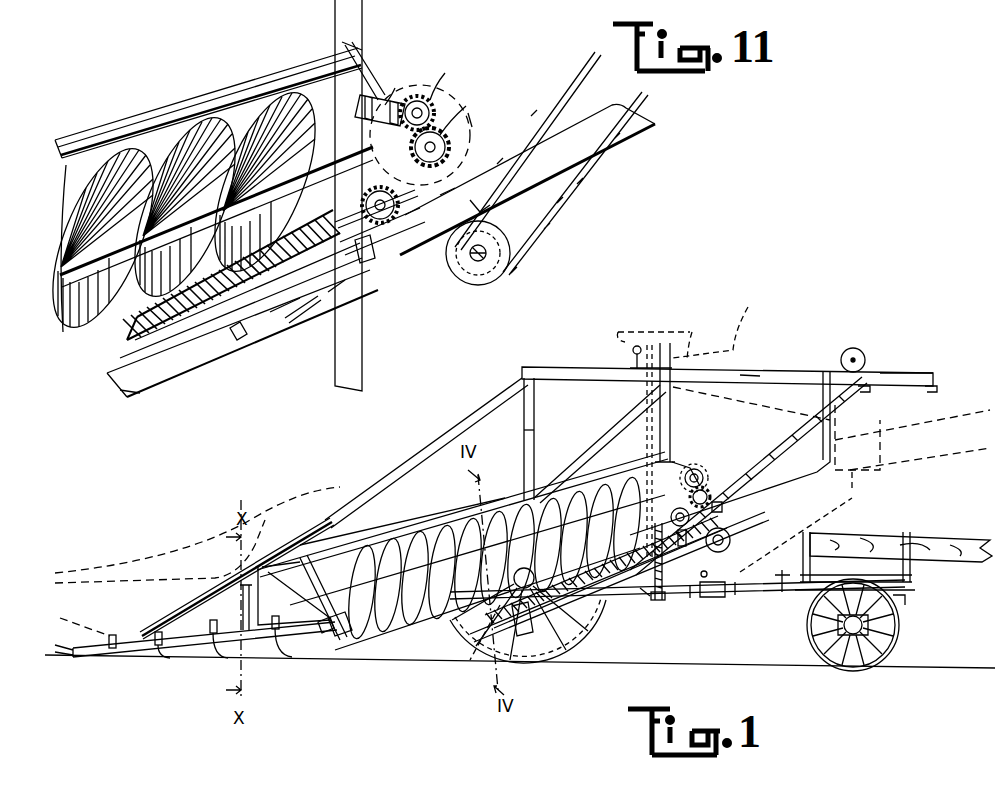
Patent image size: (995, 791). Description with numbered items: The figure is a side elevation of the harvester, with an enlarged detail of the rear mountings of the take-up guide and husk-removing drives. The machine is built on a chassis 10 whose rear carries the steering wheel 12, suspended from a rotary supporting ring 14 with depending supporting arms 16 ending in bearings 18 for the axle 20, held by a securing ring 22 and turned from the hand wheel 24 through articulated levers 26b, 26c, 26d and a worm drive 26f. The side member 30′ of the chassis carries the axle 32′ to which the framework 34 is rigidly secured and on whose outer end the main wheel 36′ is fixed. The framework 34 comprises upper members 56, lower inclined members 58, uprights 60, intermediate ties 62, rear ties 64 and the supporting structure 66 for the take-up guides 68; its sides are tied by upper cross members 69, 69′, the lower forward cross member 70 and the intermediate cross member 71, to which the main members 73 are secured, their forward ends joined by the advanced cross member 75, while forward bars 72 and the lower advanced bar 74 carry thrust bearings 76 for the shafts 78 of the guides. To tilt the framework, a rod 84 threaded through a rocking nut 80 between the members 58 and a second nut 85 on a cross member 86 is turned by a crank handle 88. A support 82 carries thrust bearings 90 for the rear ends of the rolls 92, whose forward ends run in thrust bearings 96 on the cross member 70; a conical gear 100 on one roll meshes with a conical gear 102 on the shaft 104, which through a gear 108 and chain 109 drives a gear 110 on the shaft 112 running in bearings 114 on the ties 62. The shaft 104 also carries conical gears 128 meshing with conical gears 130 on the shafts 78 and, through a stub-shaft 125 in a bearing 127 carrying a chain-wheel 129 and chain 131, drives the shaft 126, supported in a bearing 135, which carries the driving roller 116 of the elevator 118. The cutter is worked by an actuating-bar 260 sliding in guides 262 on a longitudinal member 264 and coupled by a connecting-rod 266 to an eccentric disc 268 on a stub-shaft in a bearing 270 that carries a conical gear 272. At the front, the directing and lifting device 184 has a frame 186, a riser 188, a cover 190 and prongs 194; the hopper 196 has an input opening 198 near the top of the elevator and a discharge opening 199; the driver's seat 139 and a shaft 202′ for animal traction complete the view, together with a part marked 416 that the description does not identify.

In FIG. 1, the chassis 10 is at (772, 588).
In FIG. 1, the steering wheel 12 is at (895, 635).
In FIG. 1, the rotary supporting ring 14 is at (907, 600).
In FIG. 1, the supporting arms 16 is at (812, 615).
In FIG. 1, the bearings 18 is at (808, 640).
In FIG. 1, the axle 20 is at (845, 632).
In FIG. 1, the securing ring 22 is at (905, 580).
In FIG. 1, the hand wheel 24 is at (672, 330).
In FIG. 1, the articulated lever 26b is at (790, 566).
In FIG. 1, the articulated lever 26c is at (745, 592).
In FIG. 1, the articulated lever 26d is at (692, 592).
In FIG. 1, the worm drive 26f is at (645, 597).
In FIG. 1, the side member 30′ is at (712, 600).
In FIG. 1, the axle 32′ is at (462, 660).
In FIG. 1, the framework 34 is at (800, 370).
In FIG. 1, the main wheel 36′ is at (572, 643).
In FIG. 1, the upper members 56 is at (745, 372).
In FIG. 11, the lower inclined members 58 is at (640, 130).
In FIG. 1, the lower inclined members 58 is at (822, 468).
In FIG. 1, the uprights 60 is at (522, 434).
In FIG. 11, the intermediate ties 62 is at (362, 354).
In FIG. 1, the intermediate ties 62 is at (670, 412).
In FIG. 1, the rear ties 64 is at (810, 400).
In FIG. 1, the supporting structure 66 is at (470, 418).
In FIG. 11, the take-up guides 68 is at (78, 335).
In FIG. 1, the take-up guides 68 is at (390, 650).
In FIG. 1, the upper cross member 69 is at (523, 372).
In FIG. 1, the upper cross member 69′ is at (680, 370).
In FIG. 1, the lower forward cross member 70 is at (524, 634).
In FIG. 11, the intermediate cross member 71 is at (362, 40).
In FIG. 1, the intermediate cross member 71 is at (690, 462).
In FIG. 1, the forward bars 72 is at (310, 583).
In FIG. 11, the main members 73 is at (160, 118).
In FIG. 1, the main members 73 is at (387, 533).
In FIG. 1, the lower advanced bar 74 is at (345, 640).
In FIG. 1, the advanced cross member 75 is at (327, 546).
In FIG. 1, the thrust bearings 76 is at (335, 638).
In FIG. 1, the shafts 78 is at (320, 633).
In FIG. 1, the nut 80 is at (640, 584).
In FIG. 11, the support 82 is at (303, 306).
In FIG. 1, the support 82 is at (682, 546).
In FIG. 1, the rod 84 is at (658, 430).
In FIG. 1, the second nut 85 is at (666, 596).
In FIG. 1, the cross member 86 is at (660, 600).
In FIG. 1, the crank handle 88 is at (632, 352).
In FIG. 11, the thrust bearings 90 is at (372, 262).
In FIG. 11, the roll 92 is at (213, 340).
In FIG. 1, the thrust bearing 96 is at (595, 580).
In FIG. 11, the conical gear 100 is at (296, 320).
In FIG. 11, the second conical gear 102 is at (450, 150).
In FIG. 11, the shaft 104 is at (395, 218).
In FIG. 1, the shaft 104 is at (708, 490).
In FIG. 1, the gear 108 is at (708, 569).
In FIG. 1, the chain 109 is at (745, 520).
In FIG. 11, the gear 110 is at (474, 82).
In FIG. 1, the gear 110 is at (706, 470).
In FIG. 11, the shaft 112 is at (440, 58).
In FIG. 1, the shaft 112 is at (703, 478).
In FIG. 11, the bearings 114 is at (395, 95).
In FIG. 11, the driving roller 116 is at (510, 252).
In FIG. 11, the elevator 118 is at (565, 196).
In FIG. 1, the elevator 118 is at (772, 447).
In FIG. 11, the stub-shaft 125 is at (470, 122).
In FIG. 11, the third shaft 126 is at (460, 278).
In FIG. 11, the bearing 127 is at (455, 200).
In FIG. 11, the conical gears 128 is at (447, 72).
In FIG. 11, the chain-wheel 129 is at (468, 108).
In FIG. 11, the conical gears 130 is at (437, 45).
In FIG. 11, the chain 131 is at (500, 172).
In FIG. 11, the bearing 135 is at (497, 208).
In FIG. 1, the driver's seat 139 is at (750, 318).
In FIG. 1, the directing and lifting device 184 is at (152, 618).
In FIG. 1, the frame 186 is at (183, 650).
In FIG. 1, the riser 188 is at (243, 604).
In FIG. 1, the cover 190 is at (85, 612).
In FIG. 1, the prongs 194 is at (113, 650).
In FIG. 1, the hopper 196 is at (935, 415).
In FIG. 1, the input opening 198 is at (920, 370).
In FIG. 1, the discharge opening 199 is at (866, 470).
In FIG. 1, the shaft 202′ is at (935, 540).
In FIG. 11, the actuating-bar 260 is at (140, 396).
In FIG. 11, the guides 262 is at (244, 338).
In FIG. 11, the longitudinal member 264 is at (180, 378).
In FIG. 11, the connecting-rod 266 is at (345, 290).
In FIG. 11, the disc 268 is at (420, 212).
In FIG. 11, the bearing 270 is at (405, 250).
In FIG. 11, the conical gear 272 is at (478, 212).
In FIG. 1, the pulley 416 is at (722, 546).